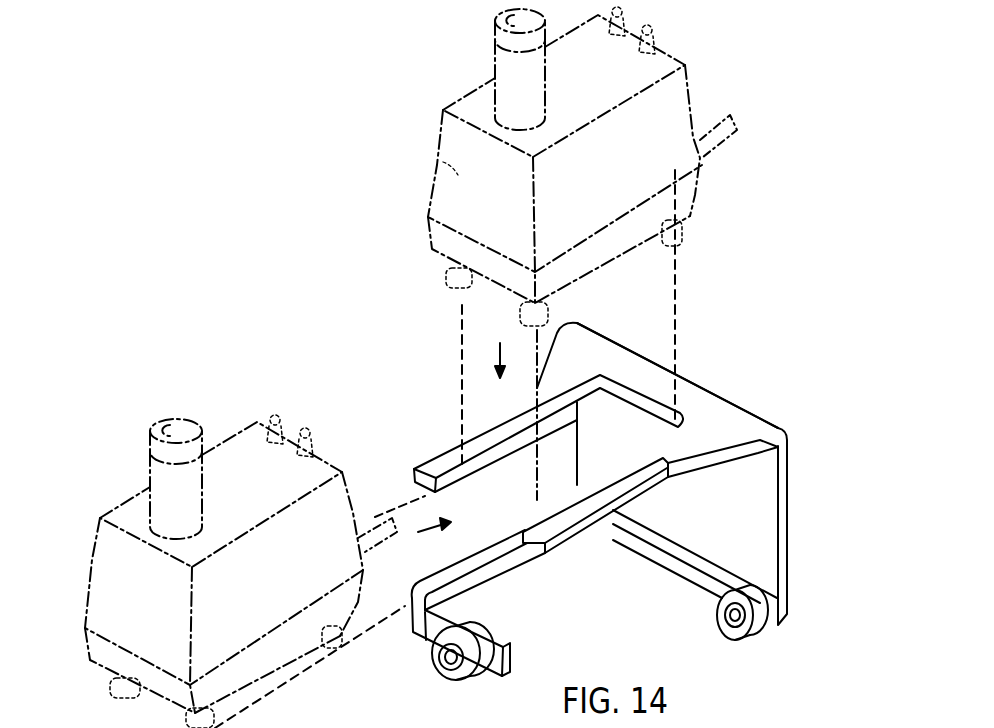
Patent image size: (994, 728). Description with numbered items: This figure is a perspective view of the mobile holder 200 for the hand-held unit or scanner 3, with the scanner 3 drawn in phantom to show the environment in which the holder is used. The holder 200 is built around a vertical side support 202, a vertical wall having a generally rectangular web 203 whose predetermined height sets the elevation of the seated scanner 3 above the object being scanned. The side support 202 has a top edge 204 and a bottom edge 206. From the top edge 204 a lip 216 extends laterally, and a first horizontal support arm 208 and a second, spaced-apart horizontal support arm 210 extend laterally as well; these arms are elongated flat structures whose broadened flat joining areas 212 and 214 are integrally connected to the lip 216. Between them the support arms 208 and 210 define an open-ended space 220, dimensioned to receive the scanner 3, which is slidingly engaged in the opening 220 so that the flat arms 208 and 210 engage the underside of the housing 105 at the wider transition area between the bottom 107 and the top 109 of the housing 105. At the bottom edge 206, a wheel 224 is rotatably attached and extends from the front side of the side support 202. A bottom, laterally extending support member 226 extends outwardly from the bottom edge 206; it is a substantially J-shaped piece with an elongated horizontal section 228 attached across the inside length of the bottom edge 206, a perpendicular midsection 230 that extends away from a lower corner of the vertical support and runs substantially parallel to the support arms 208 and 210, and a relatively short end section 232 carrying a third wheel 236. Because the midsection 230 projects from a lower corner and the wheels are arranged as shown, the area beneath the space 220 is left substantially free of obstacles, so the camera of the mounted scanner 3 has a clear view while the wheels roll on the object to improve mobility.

The hand-held unit or scanner 3 is at (673, 100).
The housing 105 is at (435, 153).
The bottom of housing 107 is at (450, 250).
The top of housing 109 is at (455, 232).
The mobile holder 200 is at (629, 511).
The vertical side support 202 is at (762, 537).
The web 203 is at (739, 517).
The top edge 204 is at (728, 435).
The bottom edge 206 is at (702, 590).
The first horizontal support arm 208 is at (447, 458).
The second horizontal support arm 210 is at (552, 545).
The joining area of first support arm 212 is at (567, 350).
The joining area of second support arm 214 is at (728, 432).
The lip 216 is at (640, 373).
The open-ended space 220 is at (652, 442).
The second wheel 224 is at (763, 633).
The bottom laterally extending support member 226 is at (458, 548).
The elongated horizontal section 228 is at (682, 558).
The perpendicular midsection 230 is at (468, 577).
The end section 232 is at (495, 660).
The third wheel 236 is at (452, 670).